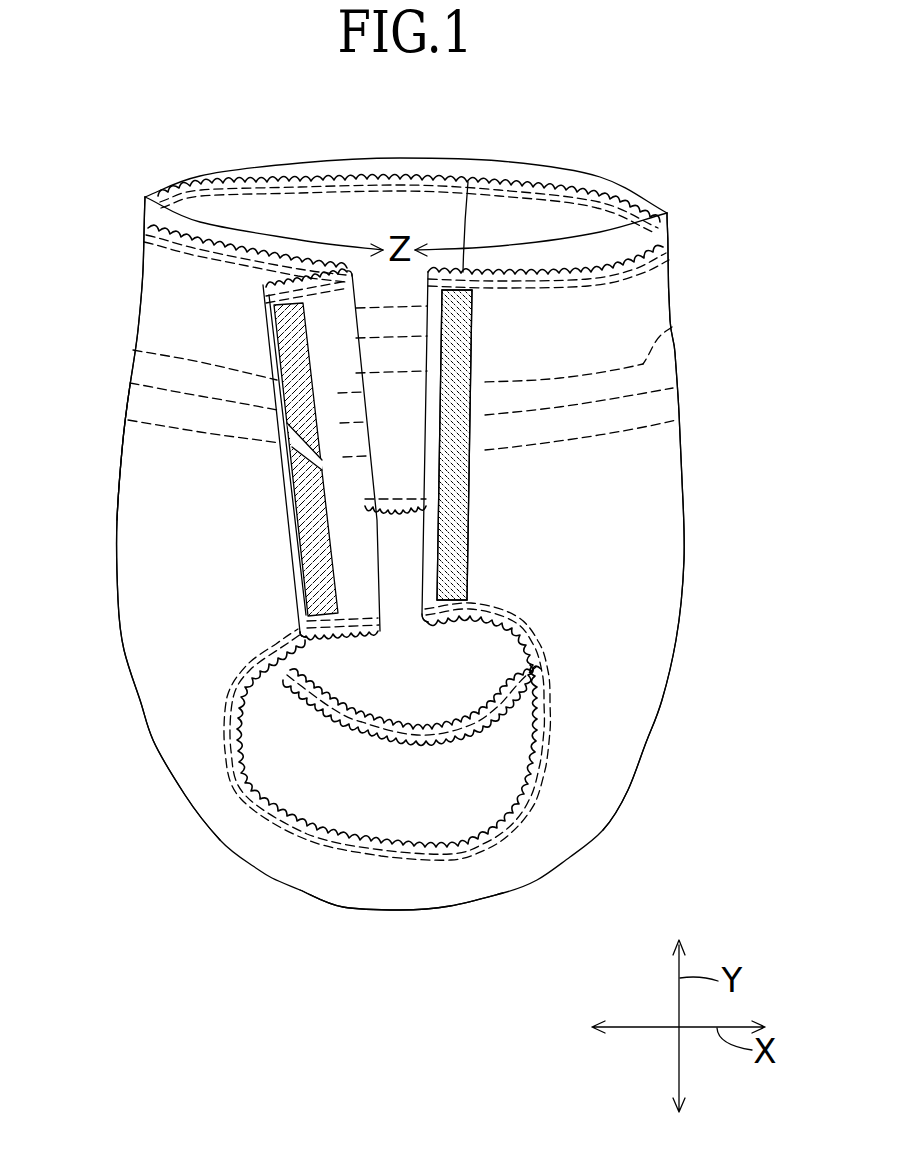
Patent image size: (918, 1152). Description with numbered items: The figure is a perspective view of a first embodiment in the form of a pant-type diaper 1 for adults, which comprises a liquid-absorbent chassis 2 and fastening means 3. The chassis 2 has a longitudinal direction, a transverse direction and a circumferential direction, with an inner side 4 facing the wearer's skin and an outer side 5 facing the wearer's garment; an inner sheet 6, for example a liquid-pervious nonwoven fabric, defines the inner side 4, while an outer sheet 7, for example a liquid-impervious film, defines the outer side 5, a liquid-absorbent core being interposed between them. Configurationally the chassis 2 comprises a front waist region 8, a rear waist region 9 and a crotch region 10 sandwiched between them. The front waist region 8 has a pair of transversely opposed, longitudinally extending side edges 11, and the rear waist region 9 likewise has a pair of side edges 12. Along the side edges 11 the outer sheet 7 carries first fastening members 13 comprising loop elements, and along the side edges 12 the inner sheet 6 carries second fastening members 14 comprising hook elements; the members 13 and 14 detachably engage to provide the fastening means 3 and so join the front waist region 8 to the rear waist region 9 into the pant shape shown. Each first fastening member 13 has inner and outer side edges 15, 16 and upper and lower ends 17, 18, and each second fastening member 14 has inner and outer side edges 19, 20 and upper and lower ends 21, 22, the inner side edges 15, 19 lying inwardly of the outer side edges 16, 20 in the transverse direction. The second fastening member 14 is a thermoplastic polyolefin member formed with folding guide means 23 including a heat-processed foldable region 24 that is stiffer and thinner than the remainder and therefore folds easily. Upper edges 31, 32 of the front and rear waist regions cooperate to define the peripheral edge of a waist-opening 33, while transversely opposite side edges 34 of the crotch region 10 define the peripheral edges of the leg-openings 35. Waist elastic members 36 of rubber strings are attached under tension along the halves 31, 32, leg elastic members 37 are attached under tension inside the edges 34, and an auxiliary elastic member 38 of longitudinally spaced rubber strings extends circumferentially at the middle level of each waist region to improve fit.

The diaper 1 is at (712, 113).
The liquid-absorbent chassis 2 is at (690, 231).
The fastening means 3 is at (332, 590).
The inner side 4 is at (386, 486).
The outer side 5 is at (155, 613).
The inner sheet 6 is at (540, 210).
The outer sheet 7 is at (148, 372).
The front waist region 8 is at (657, 487).
The rear waist region 9 is at (147, 466).
The crotch region 10 is at (397, 887).
The side edges of front waist region 11 is at (504, 205).
The side edges of rear waist region 12 is at (453, 198).
The first fastening member 13 is at (462, 345).
The second fastening member 14 is at (268, 491).
The inner side edge of first fastening member 15 is at (472, 398).
The outer side edge of first fastening member 16 is at (440, 397).
The upper end of first fastening member 17 is at (467, 290).
The lower end of first fastening member 18 is at (447, 618).
The inner side edge of second fastening member 19 is at (333, 553).
The outer side edge of second fastening member 20 is at (297, 530).
The upper end of second fastening member 21 is at (288, 308).
The lower end of second fastening member 22 is at (320, 635).
The folding guide means 23 is at (285, 426).
The foldable region 24 is at (293, 447).
The upper edge of front waist region 31 is at (618, 195).
The upper edge of rear waist region 32 is at (253, 180).
The waist-opening 33 is at (385, 232).
The side edges of crotch region 34 is at (515, 664).
The leg-opening 35 is at (410, 718).
The waist elastic members 36 is at (190, 184).
The leg elastic members 37 is at (313, 714).
The auxiliary elastic member 38 is at (673, 328).